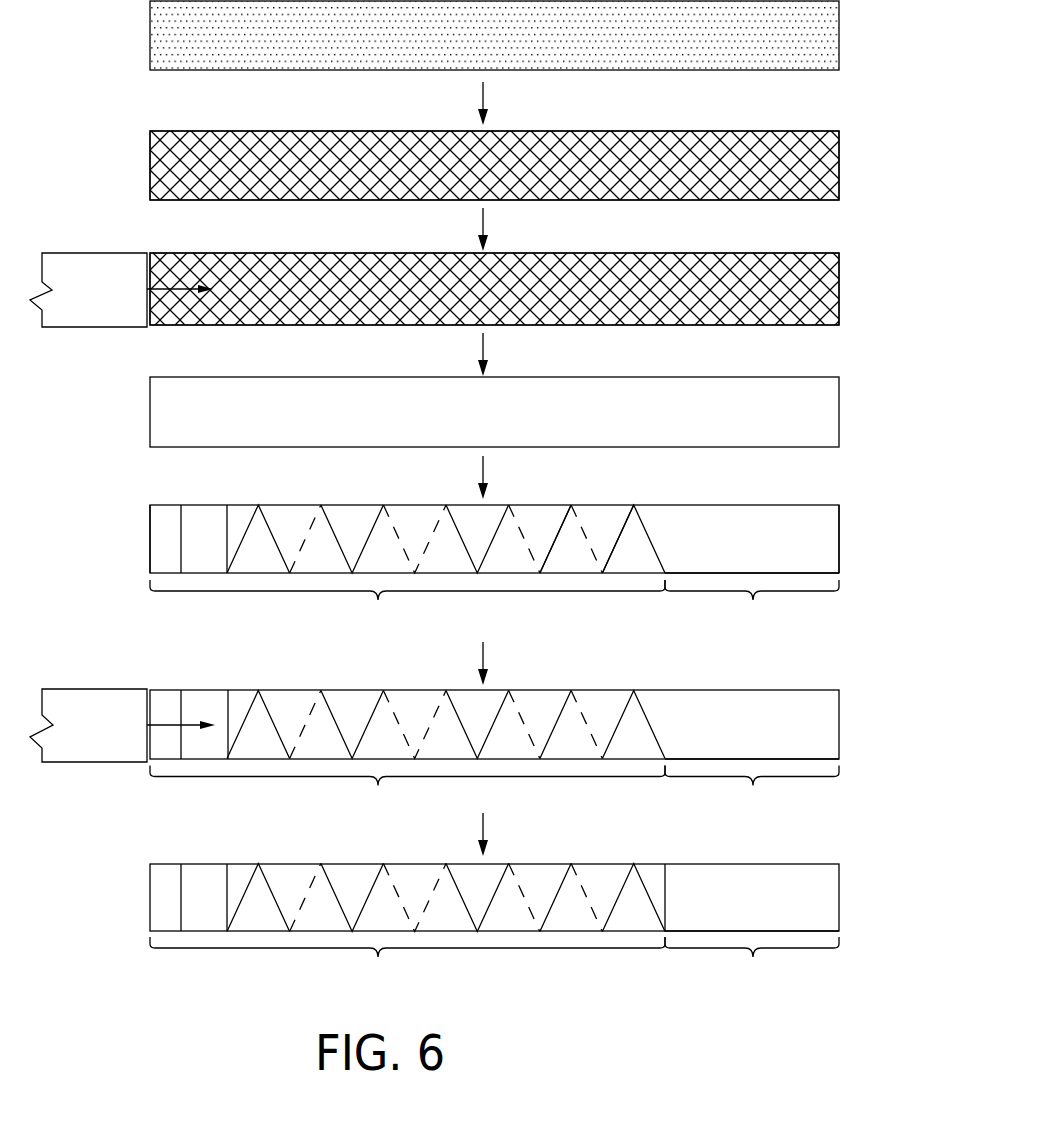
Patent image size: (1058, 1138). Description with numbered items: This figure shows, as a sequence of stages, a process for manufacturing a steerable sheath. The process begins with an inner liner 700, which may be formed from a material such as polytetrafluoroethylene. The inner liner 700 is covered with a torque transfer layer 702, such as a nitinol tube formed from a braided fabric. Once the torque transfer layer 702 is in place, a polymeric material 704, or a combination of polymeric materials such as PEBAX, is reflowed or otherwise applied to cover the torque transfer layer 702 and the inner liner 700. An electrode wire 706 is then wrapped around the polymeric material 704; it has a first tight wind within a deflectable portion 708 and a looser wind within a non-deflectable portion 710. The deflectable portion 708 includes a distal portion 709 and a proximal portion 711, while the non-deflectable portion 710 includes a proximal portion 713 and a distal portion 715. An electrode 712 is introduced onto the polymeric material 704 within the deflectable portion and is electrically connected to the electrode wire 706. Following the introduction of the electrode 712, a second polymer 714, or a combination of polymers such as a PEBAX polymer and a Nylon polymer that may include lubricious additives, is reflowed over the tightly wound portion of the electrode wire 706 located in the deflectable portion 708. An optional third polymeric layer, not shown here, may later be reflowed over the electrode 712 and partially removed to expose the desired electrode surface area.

The inner liner 700 is at (841, 33).
The torque transfer layer 702 is at (840, 175).
The polymeric material 704 is at (105, 254).
The electrode wire 706 is at (268, 518).
The deflectable portion 708 is at (494, 789).
The distal portion 709 is at (155, 495).
The non-deflectable portion 710 is at (752, 786).
The proximal portion 711 is at (587, 495).
The electrode 712 is at (208, 515).
The proximal portion 713 is at (849, 495).
The second polymer 714 is at (95, 700).
The distal portion 715 is at (655, 496).